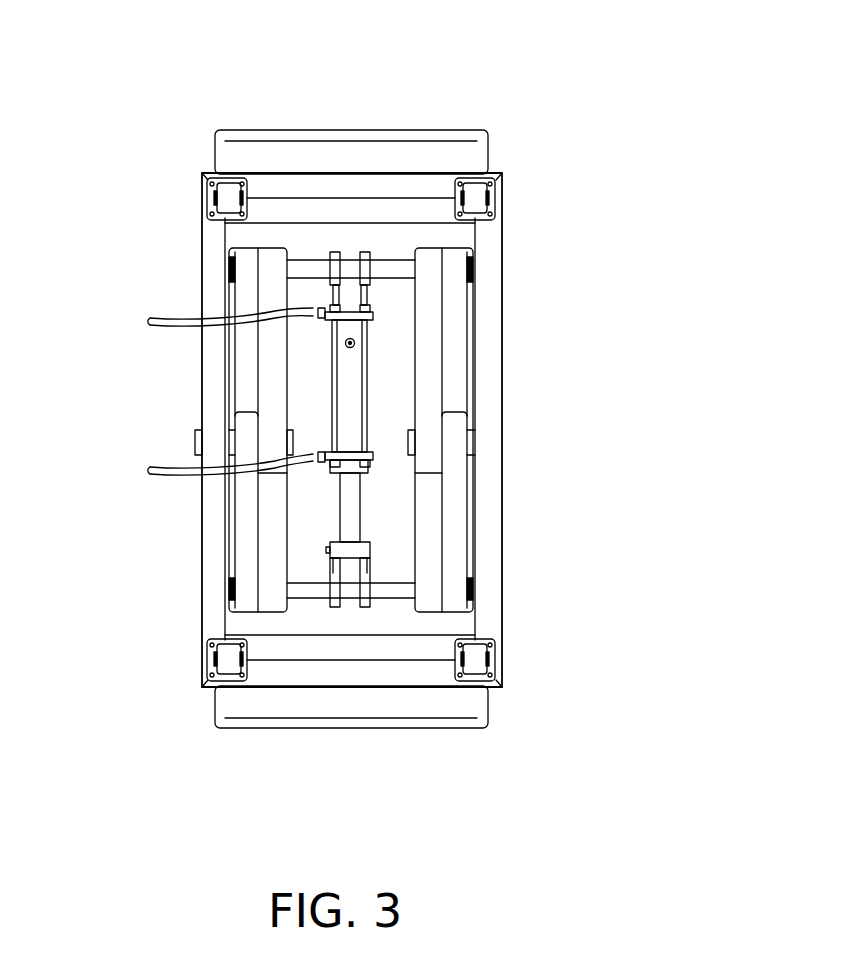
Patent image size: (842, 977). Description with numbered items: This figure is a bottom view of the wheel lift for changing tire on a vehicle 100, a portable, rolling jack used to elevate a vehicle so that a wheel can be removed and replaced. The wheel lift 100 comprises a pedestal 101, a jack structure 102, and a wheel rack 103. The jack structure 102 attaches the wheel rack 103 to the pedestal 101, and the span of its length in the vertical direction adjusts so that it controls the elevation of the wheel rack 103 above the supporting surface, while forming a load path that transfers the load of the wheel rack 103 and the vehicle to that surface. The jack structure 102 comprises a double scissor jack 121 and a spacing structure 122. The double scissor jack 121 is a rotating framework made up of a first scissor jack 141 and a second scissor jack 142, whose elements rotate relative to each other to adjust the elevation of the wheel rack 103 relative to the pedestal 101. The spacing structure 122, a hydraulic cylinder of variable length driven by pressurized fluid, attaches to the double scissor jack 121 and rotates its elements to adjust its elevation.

The wheel lift for changing tire on a vehicle 100 is at (152, 83).
The pedestal 101 is at (502, 462).
The jack structure 102 is at (618, 185).
The wheel rack 103 is at (360, 130).
The double scissor jack 121 is at (415, 588).
The spacing structure 122 is at (348, 372).
The first scissor jack 141 is at (450, 425).
The second scissor jack 142 is at (265, 357).